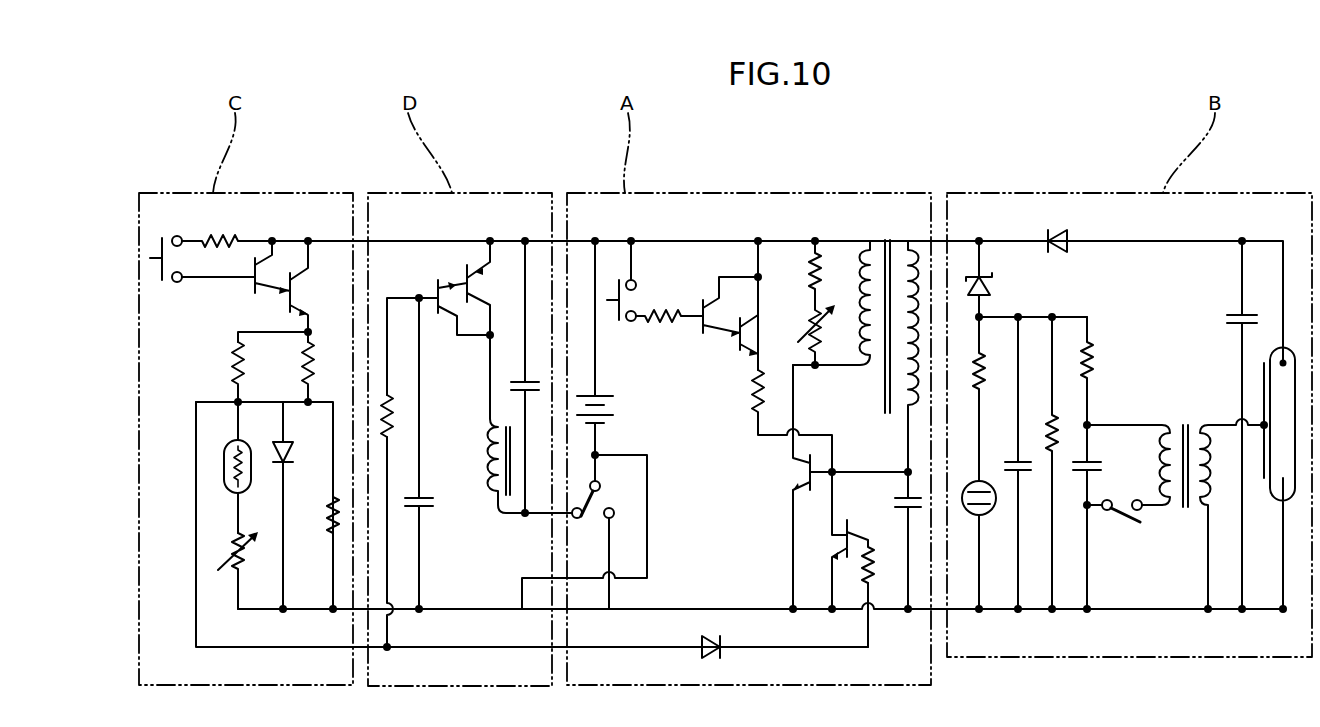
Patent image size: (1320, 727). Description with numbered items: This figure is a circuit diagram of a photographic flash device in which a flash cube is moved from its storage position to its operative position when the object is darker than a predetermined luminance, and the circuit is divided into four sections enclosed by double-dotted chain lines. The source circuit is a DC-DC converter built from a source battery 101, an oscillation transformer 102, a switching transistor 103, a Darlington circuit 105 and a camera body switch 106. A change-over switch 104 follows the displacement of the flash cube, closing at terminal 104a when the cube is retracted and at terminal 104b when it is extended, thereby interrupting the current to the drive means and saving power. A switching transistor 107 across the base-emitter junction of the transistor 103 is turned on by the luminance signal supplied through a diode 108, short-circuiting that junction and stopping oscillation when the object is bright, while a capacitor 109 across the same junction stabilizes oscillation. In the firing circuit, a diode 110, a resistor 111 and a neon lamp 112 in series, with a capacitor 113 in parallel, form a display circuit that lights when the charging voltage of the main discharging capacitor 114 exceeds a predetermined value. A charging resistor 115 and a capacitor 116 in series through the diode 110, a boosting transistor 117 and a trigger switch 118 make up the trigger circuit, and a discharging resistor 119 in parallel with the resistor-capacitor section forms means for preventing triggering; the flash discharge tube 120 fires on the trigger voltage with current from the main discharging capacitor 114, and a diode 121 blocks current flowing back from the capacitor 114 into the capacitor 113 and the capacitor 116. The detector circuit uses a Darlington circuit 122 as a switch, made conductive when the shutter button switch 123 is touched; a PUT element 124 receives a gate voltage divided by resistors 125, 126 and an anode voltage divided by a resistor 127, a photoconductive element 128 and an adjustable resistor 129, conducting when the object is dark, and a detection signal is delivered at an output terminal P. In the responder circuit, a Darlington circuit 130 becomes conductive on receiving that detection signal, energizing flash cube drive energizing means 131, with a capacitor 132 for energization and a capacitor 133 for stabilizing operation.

The source battery 101 is at (600, 408).
The oscillation transformer 102 is at (886, 240).
The switching transistor 103 is at (800, 465).
The change-over switch 104 is at (590, 498).
The terminal 104a is at (580, 520).
The terminal 104b is at (614, 515).
The Darlington circuit 105 is at (742, 300).
The camera body switch 106 is at (612, 312).
The switching transistor 107 is at (840, 540).
The diode 108 is at (700, 655).
The capacitor 109 is at (898, 500).
The diode 110 is at (985, 290).
The resistor 111 is at (985, 370).
The neon lamp 112 is at (972, 510).
The capacitor 113 is at (1032, 470).
The main discharging capacitor 114 is at (1226, 320).
The charging resistor 115 is at (1095, 352).
The capacitor 116 is at (1100, 466).
The boosting transistor 117 is at (1185, 422).
The trigger switch 118 is at (1130, 518).
The discharging resistor 119 is at (1065, 432).
The flash discharge tube 120 is at (1277, 482).
The diode 121 is at (1062, 236).
The Darlington circuit 122 is at (290, 268).
The switch 123 is at (162, 237).
The PUT element 124 is at (280, 445).
The resistor 125 is at (312, 360).
The resistor 126 is at (326, 515).
The resistor 127 is at (234, 360).
The photoconductive element 128 is at (228, 467).
The adjustable resistor 129 is at (230, 545).
The Darlington circuit 130 is at (462, 295).
The flash cube drive energizing means 131 is at (478, 448).
The capacitor 132 is at (510, 387).
The capacitor 133 is at (433, 508).
The output terminal P is at (232, 400).